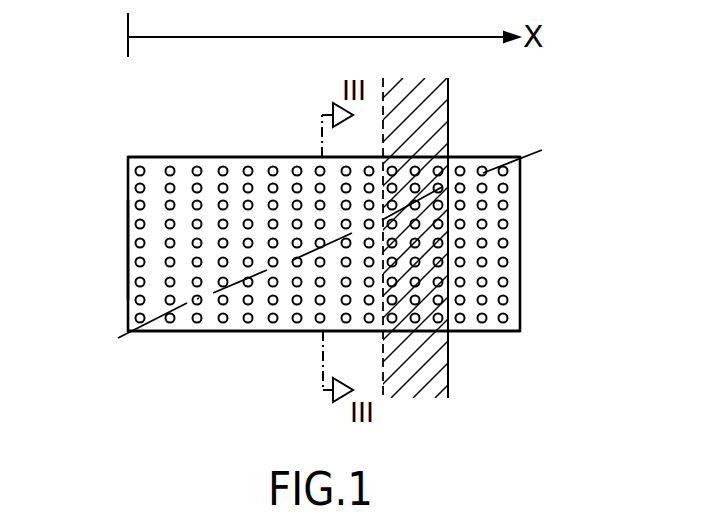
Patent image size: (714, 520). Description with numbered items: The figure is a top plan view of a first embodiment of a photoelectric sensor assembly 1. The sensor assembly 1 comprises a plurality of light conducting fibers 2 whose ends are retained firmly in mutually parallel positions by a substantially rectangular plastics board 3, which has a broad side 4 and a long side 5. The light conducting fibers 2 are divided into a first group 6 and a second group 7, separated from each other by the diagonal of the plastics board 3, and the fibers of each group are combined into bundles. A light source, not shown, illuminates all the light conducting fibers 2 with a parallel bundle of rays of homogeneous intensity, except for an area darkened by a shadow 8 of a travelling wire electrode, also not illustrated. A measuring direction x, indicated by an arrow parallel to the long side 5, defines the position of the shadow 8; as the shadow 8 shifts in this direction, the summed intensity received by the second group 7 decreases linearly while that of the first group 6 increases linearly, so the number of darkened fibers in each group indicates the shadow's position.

The sensor assembly 1 is at (346, 253).
The light conducting fibers 2 is at (134, 191).
The plastics board 3 is at (130, 268).
The broad side 4 is at (128, 226).
The long side 5 is at (214, 333).
The first group 6 is at (496, 344).
The second group 7 is at (204, 145).
The shadow 8 is at (407, 124).